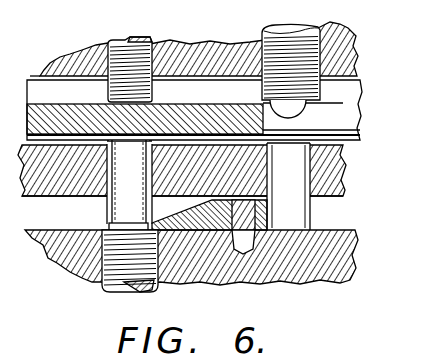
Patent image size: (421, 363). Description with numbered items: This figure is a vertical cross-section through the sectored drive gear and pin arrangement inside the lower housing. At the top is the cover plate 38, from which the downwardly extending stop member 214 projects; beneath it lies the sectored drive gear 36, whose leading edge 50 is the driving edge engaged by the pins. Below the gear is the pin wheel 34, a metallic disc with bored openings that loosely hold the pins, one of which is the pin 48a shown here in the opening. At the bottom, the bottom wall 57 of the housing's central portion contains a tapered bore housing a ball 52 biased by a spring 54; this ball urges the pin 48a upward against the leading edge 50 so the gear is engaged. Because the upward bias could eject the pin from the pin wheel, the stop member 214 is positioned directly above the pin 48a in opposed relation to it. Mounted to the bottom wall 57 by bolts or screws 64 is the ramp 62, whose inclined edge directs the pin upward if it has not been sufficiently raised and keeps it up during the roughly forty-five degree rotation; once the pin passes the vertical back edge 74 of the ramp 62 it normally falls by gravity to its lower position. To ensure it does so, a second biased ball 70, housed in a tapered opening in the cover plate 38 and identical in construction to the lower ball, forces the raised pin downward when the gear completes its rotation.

The downwardly extending stop member 214 is at (126, 55).
The cover plate 38 is at (192, 51).
The sectored drive gear 36 is at (214, 108).
The second biased ball 70 is at (298, 106).
The leading edge 50 is at (360, 133).
The pin wheel 34 is at (343, 173).
The pin 48a is at (125, 170).
The ball 52 is at (113, 227).
The ramp 62 is at (202, 225).
The vertical back edge 74 is at (268, 209).
The bottom wall 57 is at (63, 258).
The spring 54 is at (115, 286).
The bolts or screws 64 is at (242, 257).